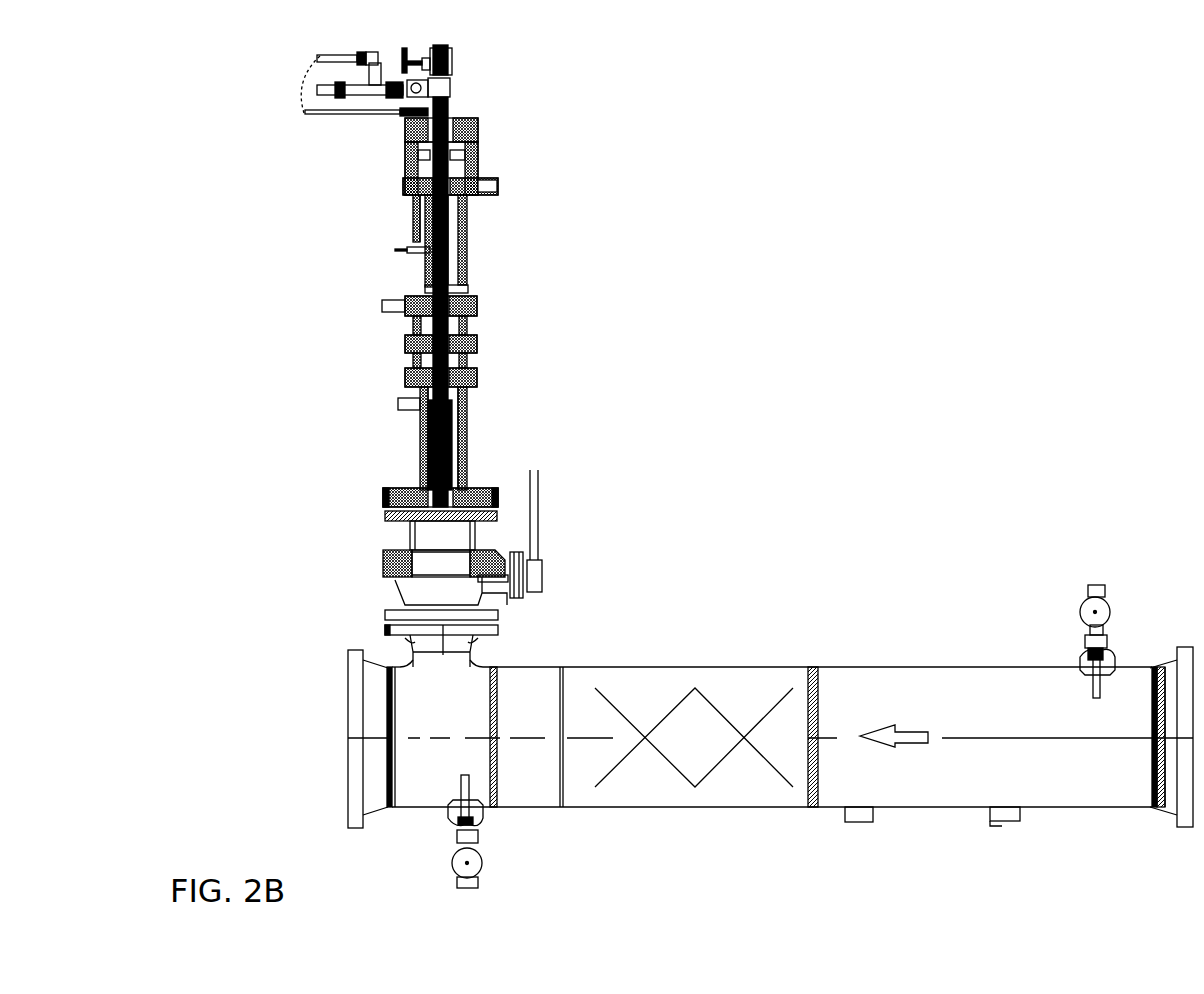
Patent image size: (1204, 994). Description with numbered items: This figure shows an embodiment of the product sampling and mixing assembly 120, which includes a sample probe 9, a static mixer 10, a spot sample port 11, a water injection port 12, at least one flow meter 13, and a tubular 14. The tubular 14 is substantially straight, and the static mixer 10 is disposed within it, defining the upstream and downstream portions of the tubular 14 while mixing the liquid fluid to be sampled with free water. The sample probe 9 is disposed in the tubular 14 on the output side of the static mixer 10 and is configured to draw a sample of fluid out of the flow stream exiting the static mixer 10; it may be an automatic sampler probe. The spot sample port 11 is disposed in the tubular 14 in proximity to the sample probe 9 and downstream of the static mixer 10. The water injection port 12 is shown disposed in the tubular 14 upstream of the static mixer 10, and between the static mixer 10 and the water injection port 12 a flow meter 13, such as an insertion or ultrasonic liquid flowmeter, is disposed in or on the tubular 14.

The product sampling and mixing assembly 120 is at (270, 73).
The sample probe 9 is at (478, 348).
The static mixer 10 is at (712, 667).
The spot sample port 11 is at (483, 815).
The water injection port 12 is at (1088, 628).
The flow meter 13 is at (852, 828).
The tubular 14 is at (350, 813).